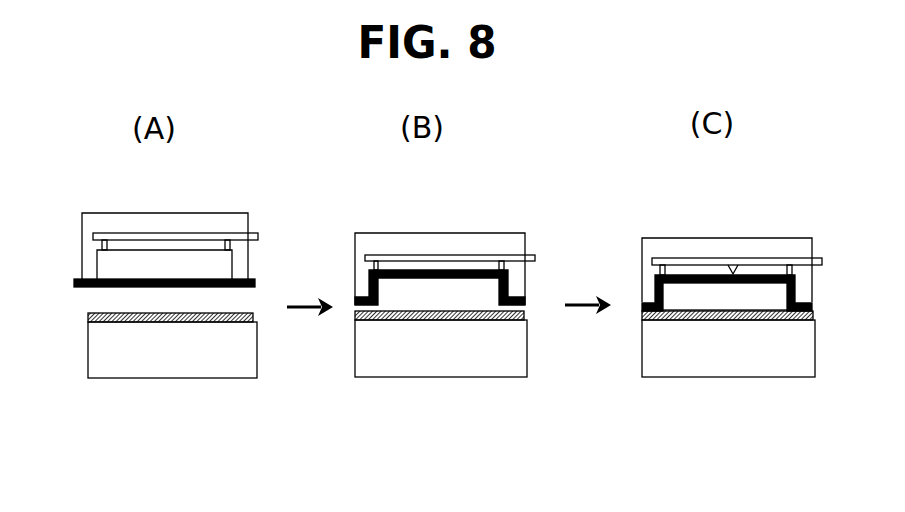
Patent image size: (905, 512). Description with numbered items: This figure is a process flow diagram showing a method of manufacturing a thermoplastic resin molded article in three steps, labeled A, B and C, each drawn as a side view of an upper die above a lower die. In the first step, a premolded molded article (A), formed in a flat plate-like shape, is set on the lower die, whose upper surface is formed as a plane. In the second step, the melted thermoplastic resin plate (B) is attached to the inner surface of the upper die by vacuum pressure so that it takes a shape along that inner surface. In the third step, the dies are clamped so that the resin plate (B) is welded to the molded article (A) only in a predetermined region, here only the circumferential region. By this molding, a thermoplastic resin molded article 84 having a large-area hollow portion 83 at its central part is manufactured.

The hollow portion 83 is at (755, 300).
The thermoplastic resin molded article 84 is at (733, 272).